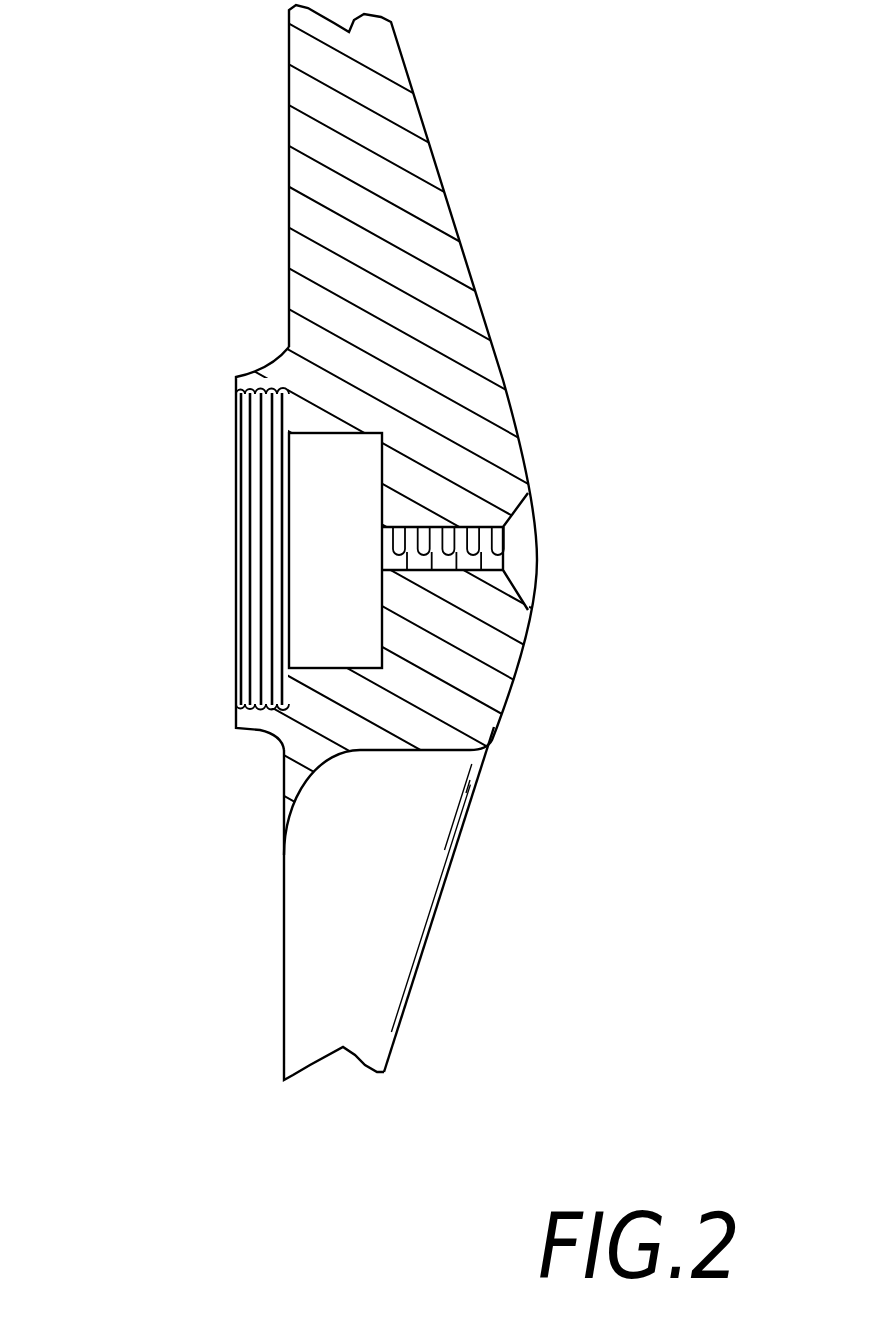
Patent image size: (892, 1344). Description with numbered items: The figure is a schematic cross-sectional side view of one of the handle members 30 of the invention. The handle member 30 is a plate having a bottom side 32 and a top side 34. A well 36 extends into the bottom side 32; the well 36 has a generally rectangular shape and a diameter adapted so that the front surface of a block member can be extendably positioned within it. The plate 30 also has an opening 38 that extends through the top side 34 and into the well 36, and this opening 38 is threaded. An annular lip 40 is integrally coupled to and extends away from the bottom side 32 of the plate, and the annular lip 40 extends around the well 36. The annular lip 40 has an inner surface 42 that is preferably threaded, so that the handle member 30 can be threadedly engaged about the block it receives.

The handle member 30 is at (495, 969).
The bottom side 32 is at (283, 968).
The top side 34 is at (473, 805).
The well 36 is at (285, 555).
The opening 38 is at (527, 548).
The annular lip 40 is at (262, 727).
The inner surface 42 is at (246, 430).